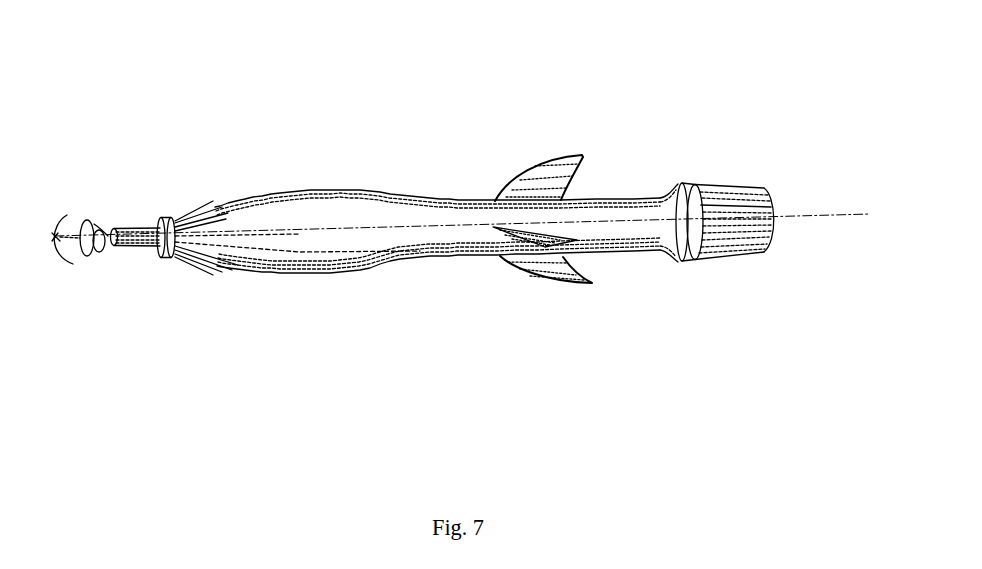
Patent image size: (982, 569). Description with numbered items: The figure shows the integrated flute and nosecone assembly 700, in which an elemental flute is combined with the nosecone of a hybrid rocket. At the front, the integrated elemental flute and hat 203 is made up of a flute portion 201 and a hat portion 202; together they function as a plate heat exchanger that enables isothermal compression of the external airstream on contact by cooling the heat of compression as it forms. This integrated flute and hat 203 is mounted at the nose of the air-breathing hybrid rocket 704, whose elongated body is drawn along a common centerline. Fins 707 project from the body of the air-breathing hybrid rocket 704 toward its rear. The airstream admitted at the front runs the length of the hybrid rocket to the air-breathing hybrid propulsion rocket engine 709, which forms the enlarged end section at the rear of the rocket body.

The integrated flute and nosecone on air-breathing hybrid rocket 700 is at (461, 262).
The flute portion 201 is at (131, 230).
The hat portion 202 is at (200, 202).
The integrated elemental flute and hat 203 is at (163, 250).
The air-breathing hybrid rocket 704 is at (388, 197).
The fins 707 is at (533, 162).
The air-breathing hybrid propulsion rocket engine 709 is at (753, 182).